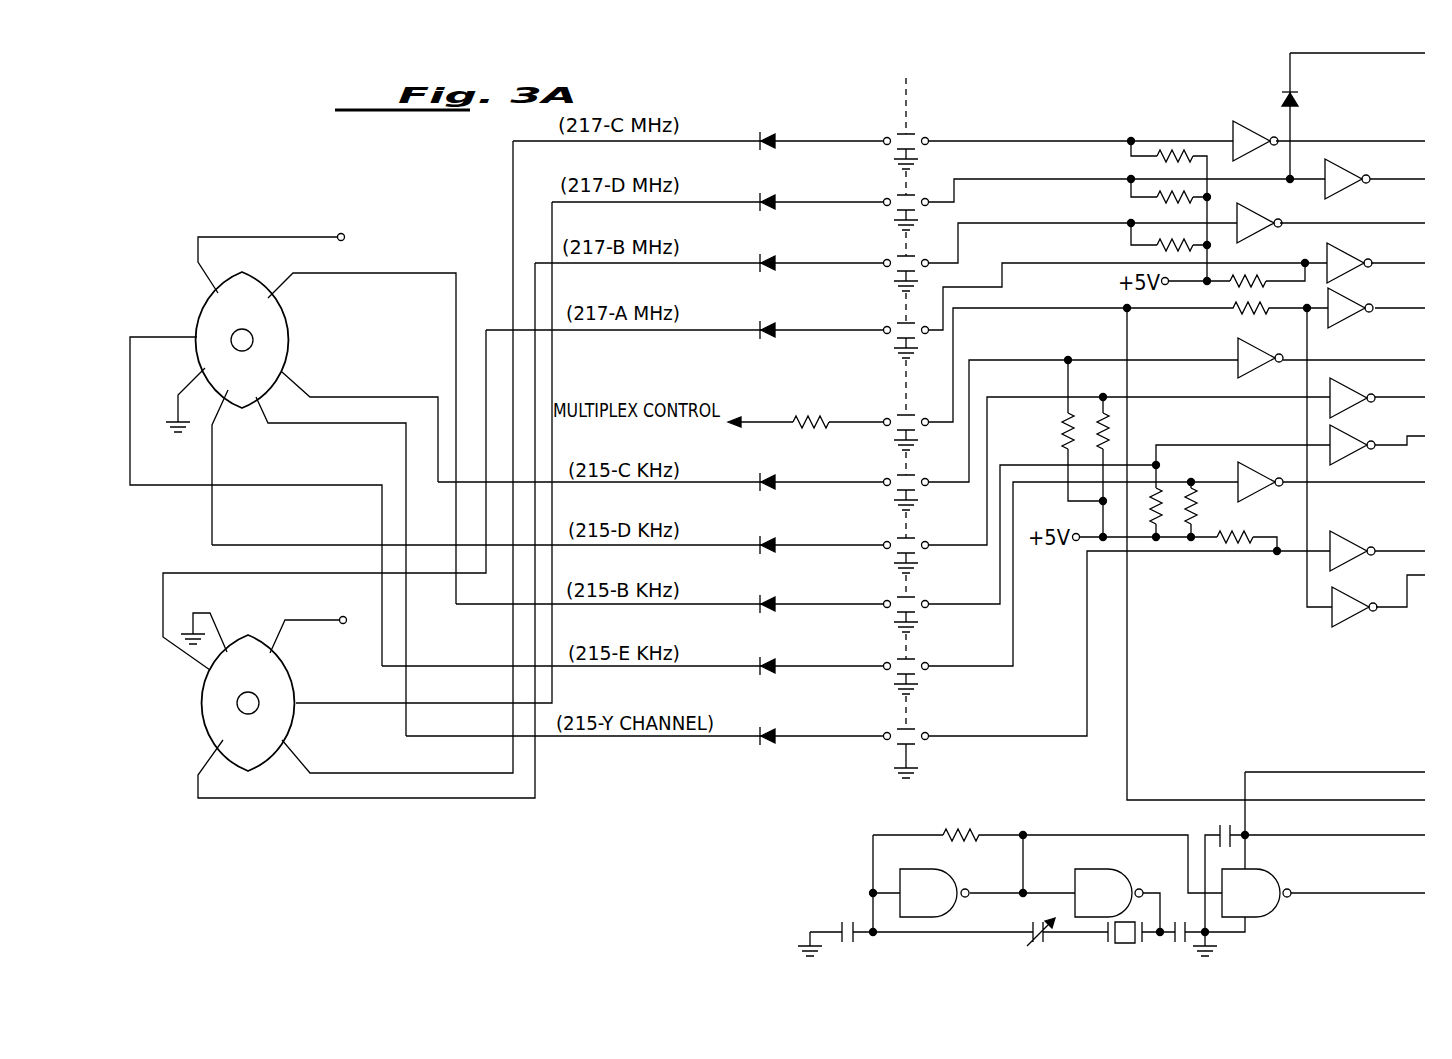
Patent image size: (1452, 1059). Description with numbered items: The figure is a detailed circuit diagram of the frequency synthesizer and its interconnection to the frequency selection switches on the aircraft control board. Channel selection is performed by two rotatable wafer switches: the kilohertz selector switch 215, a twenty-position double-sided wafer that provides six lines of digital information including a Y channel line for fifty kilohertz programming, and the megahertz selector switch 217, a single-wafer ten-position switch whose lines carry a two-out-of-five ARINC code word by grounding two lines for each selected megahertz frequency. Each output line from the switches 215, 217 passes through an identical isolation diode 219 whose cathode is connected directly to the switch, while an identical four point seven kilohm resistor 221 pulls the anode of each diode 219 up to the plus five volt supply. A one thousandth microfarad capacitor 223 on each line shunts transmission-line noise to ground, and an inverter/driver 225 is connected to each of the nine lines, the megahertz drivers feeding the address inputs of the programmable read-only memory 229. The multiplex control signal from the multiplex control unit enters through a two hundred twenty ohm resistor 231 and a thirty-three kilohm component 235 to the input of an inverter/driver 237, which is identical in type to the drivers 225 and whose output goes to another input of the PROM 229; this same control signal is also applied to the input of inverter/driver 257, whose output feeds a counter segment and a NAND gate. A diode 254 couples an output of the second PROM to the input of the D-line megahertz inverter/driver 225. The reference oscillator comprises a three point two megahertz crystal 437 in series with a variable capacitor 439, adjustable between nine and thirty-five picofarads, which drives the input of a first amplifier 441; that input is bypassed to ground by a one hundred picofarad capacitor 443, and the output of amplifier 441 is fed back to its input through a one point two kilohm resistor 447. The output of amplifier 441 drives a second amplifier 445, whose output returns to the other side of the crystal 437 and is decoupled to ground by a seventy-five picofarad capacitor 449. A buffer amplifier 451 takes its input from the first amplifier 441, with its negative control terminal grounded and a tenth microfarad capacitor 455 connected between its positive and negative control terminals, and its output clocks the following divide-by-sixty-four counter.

The kilohertz selector switch 215 is at (207, 307).
The megahertz selector switch 217 is at (193, 697).
The diode 219 is at (770, 193).
The resistor 221 is at (1156, 157).
The capacitor 223 is at (890, 428).
The inverter/driver 225 is at (1248, 118).
The programmable read-only memory 229 is at (662, 432).
The resistor 231 is at (805, 412).
The capacitor 235 is at (1244, 310).
The inverter/driver 237 is at (1346, 318).
The diode 254 is at (1303, 93).
The inverter/driver 257 is at (1348, 618).
The crystal 437 is at (1115, 937).
The variable capacitor 439 is at (1030, 940).
The first amplifier 441 is at (945, 880).
The capacitor 443 is at (838, 925).
The second amplifier 445 is at (1105, 880).
The resistor 447 is at (955, 830).
The capacitor 449 is at (1177, 941).
The buffer amplifier 451 is at (1265, 880).
The capacitor 455 is at (1216, 835).